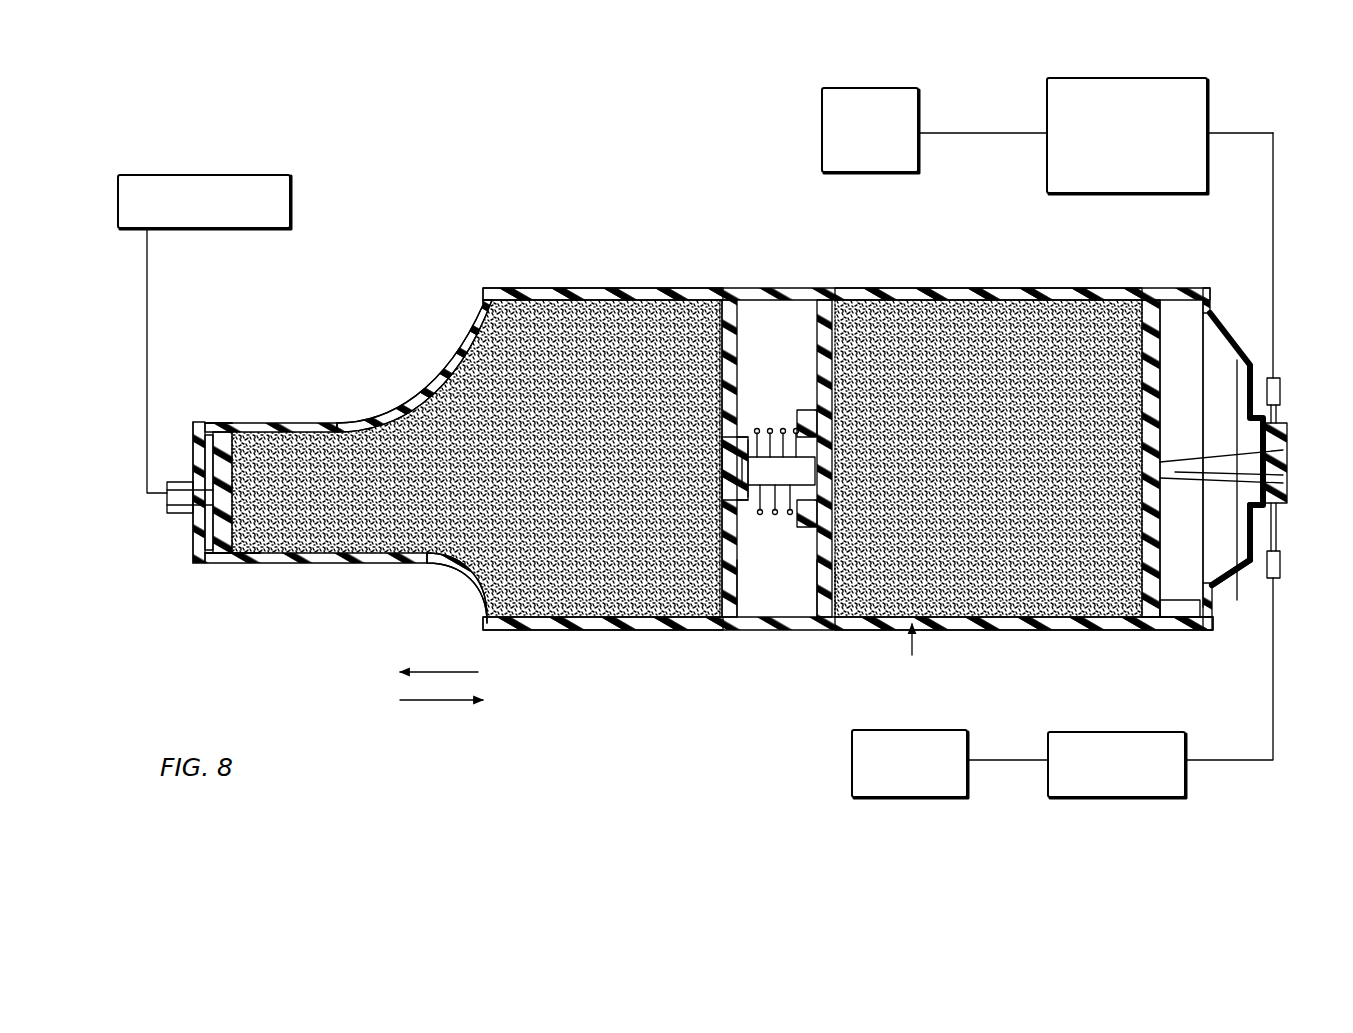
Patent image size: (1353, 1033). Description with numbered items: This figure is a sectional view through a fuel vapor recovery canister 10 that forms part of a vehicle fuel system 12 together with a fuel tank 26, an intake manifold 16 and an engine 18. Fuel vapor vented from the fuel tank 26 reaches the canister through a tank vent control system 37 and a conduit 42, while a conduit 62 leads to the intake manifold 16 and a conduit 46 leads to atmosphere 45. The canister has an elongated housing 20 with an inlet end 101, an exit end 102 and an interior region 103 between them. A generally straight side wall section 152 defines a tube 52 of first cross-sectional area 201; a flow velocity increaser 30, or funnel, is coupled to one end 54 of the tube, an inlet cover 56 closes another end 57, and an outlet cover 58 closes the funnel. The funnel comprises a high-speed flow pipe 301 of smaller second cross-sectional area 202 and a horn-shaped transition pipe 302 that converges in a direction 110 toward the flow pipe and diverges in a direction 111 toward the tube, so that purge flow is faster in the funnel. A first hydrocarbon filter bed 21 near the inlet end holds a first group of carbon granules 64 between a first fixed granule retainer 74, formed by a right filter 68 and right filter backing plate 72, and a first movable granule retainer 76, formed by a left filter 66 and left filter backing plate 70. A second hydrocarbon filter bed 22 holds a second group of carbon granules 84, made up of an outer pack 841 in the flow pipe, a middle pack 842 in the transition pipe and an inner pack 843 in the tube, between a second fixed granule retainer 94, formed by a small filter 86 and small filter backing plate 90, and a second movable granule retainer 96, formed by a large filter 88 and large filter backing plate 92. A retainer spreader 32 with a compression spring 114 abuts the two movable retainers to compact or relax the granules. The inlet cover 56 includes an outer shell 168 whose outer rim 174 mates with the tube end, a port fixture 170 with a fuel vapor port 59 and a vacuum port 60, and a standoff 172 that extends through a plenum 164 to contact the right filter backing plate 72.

The fuel vapor recovery canister 10 is at (492, 216).
The vehicle fuel system 12 is at (1025, 80).
The intake manifold 16 is at (1092, 732).
The engine 18 is at (852, 762).
The elongated housing 20 is at (478, 297).
The first hydrocarbon filter bed 21 is at (950, 292).
The second hydrocarbon filter bed 22 is at (557, 288).
The fuel tank 26 is at (822, 148).
The flow velocity increaser 30 is at (425, 582).
The retainer spreader 32 is at (768, 400).
The tank vent control system 37 is at (1047, 164).
The conduit 42 is at (1242, 133).
The atmosphere 45 is at (233, 175).
The conduit 46 is at (148, 272).
The tube 52 is at (640, 285).
The one end of tube 54 is at (500, 288).
The inlet cover 56 is at (1236, 595).
The another end of tube 57 is at (1178, 295).
The outlet cover 58 is at (183, 562).
The fuel vapor port 59 is at (1280, 397).
The vacuum port 60 is at (1282, 562).
The conduit 62 is at (170, 516).
The first group of carbon granules 64 is at (950, 600).
The left filter 66 is at (831, 622).
The right filter 68 is at (1140, 626).
The left filter backing plate 70 is at (824, 600).
The right filter backing plate 72 is at (1150, 630).
The first fixed granule retainer 74 is at (1147, 293).
The first movable granule retainer 76 is at (826, 295).
The second group of carbon granules 84 is at (390, 560).
The small filter 86 is at (232, 557).
The large filter 88 is at (770, 590).
The small filter backing plate 90 is at (225, 555).
The large filter backing plate 92 is at (737, 622).
The second fixed granule retainer 94 is at (213, 418).
The second movable granule retainer 96 is at (737, 288).
The inlet end 101 is at (1218, 285).
The exit end 102 is at (172, 415).
The interior region 103 is at (1180, 352).
The direction 110 is at (438, 670).
The direction 111 is at (440, 698).
The compression spring 114 is at (767, 516).
The generally straight side wall section 152 is at (772, 296).
The plenum 164 is at (1209, 382).
The outer shell 168 is at (1245, 578).
The port fixture 170 is at (1290, 446).
The standoff 172 is at (1222, 460).
The outer rim 174 is at (1178, 612).
The first cross-sectional area 201 is at (912, 288).
The second cross-sectional area 202 is at (303, 418).
The high-speed flow pipe 301 is at (272, 565).
The horn-shaped transition pipe 302 is at (445, 360).
The outer pack 841 is at (260, 463).
The middle pack 842 is at (408, 435).
The inner pack 843 is at (597, 320).